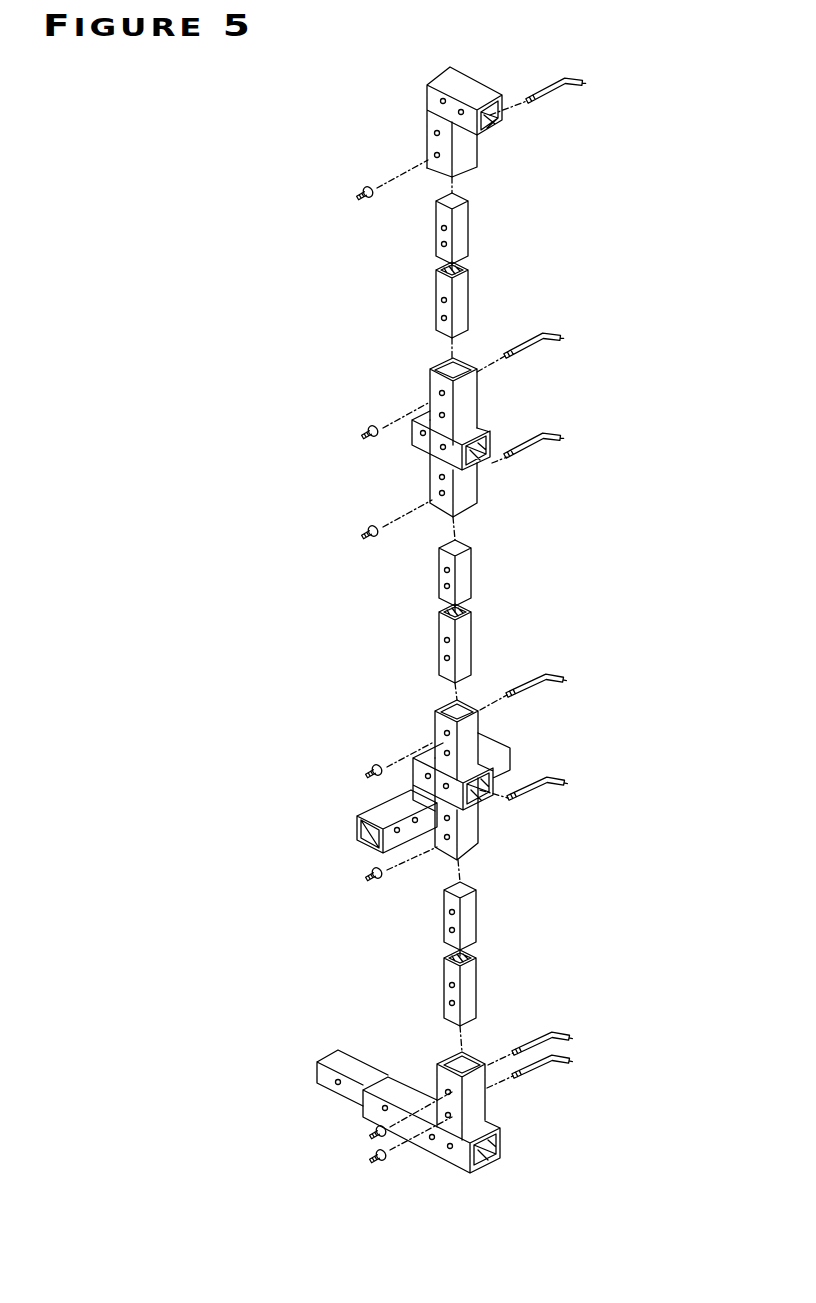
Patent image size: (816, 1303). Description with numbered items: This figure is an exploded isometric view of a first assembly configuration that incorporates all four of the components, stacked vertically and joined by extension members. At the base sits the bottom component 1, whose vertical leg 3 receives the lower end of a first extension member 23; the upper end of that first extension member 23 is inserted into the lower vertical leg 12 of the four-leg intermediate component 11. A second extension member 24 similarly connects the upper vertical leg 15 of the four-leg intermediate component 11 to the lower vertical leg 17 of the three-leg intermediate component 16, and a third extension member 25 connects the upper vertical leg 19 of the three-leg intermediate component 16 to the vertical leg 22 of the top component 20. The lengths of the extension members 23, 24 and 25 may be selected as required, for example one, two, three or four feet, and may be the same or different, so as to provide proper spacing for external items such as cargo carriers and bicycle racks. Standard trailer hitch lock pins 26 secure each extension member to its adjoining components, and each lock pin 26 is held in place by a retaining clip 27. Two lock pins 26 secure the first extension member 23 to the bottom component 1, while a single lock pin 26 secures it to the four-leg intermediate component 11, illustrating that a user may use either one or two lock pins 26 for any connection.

The bottom component 1 is at (317, 1071).
The vertical leg 3 is at (435, 1077).
The four-leg intermediate component 11 is at (354, 826).
The lower vertical leg 12 is at (467, 845).
The upper vertical leg 15 is at (437, 722).
The three-leg intermediate component 16 is at (425, 486).
The lower vertical leg 17 is at (470, 492).
The upper vertical leg 19 is at (432, 372).
The top component 20 is at (424, 121).
The vertical leg 22 is at (468, 152).
The first extension member 23 is at (439, 888).
The second extension member 24 is at (432, 545).
The third extension member 25 is at (426, 195).
The lock pins 26 is at (568, 778).
The retaining clip 27 is at (369, 875).